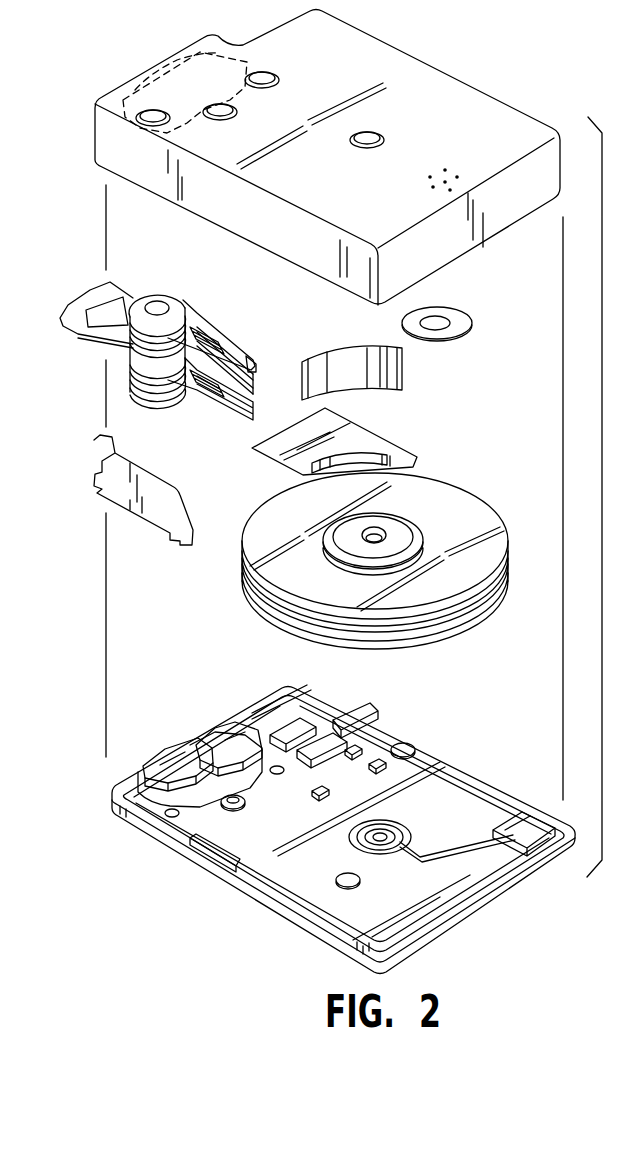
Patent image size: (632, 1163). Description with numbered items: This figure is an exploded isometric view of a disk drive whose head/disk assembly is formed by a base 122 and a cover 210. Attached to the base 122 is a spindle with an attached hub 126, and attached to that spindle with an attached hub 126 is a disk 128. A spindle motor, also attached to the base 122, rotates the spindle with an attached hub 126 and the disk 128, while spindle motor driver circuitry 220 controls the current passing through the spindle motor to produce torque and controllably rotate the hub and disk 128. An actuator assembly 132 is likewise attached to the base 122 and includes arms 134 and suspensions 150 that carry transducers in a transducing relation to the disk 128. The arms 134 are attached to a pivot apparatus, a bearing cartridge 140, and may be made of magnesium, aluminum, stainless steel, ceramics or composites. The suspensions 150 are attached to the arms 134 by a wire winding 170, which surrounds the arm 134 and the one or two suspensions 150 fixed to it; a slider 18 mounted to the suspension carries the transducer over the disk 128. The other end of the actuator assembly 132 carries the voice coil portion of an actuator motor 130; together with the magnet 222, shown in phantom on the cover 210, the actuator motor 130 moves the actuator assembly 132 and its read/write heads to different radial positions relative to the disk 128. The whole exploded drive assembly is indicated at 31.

The head suspension / slider 18 is at (250, 368).
The disk drive assembly 31 is at (378, 717).
The base 122 is at (443, 783).
The spindle with an attached hub 126 is at (373, 530).
The disk 128 is at (398, 541).
The actuator motor 130 is at (185, 317).
The actuator assembly 132 is at (120, 385).
The arms 134 is at (180, 295).
The bearing cartridge 140 is at (157, 305).
The suspensions 150 is at (238, 356).
The wire winding 170 is at (215, 328).
The cover 210 is at (463, 107).
The spindle motor driver circuitry 220 is at (177, 748).
The magnet 222 is at (187, 60).